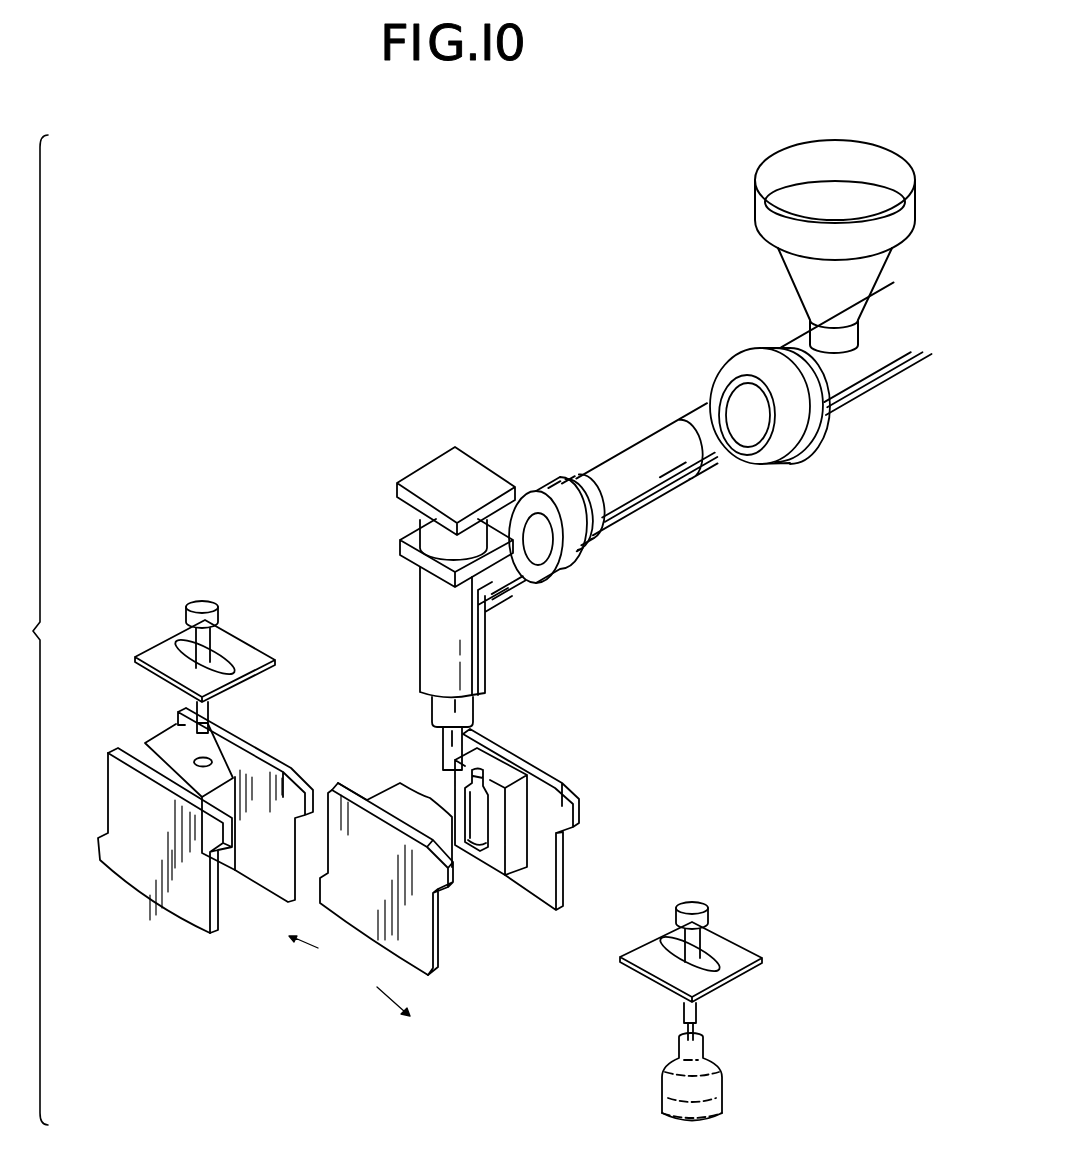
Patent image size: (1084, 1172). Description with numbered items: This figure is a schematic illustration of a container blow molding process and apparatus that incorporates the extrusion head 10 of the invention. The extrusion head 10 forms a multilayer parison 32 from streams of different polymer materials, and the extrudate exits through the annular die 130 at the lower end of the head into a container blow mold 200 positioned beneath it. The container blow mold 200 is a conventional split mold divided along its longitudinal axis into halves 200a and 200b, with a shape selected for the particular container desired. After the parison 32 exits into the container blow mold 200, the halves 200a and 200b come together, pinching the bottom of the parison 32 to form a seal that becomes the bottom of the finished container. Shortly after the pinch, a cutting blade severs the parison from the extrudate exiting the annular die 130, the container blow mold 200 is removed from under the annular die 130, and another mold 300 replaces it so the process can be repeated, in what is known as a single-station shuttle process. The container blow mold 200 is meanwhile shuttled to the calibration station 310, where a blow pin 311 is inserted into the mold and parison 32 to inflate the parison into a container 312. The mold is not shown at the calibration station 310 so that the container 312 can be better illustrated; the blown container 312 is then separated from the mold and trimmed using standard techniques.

The extrusion head 10 is at (486, 661).
The annular die 130 is at (472, 713).
The multilayer parison 32 is at (440, 738).
The mold 300 is at (155, 709).
The container blow mold 200 is at (507, 865).
The mold half 200a is at (540, 856).
The mold half 200b is at (432, 945).
The calibration station 310 is at (740, 993).
The blow pin 311 is at (708, 918).
The container 312 is at (724, 1096).